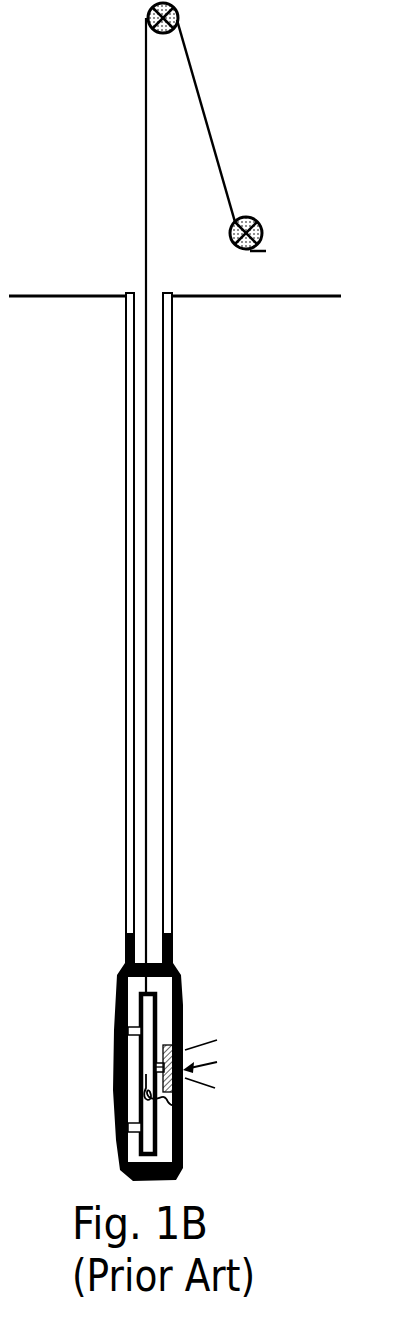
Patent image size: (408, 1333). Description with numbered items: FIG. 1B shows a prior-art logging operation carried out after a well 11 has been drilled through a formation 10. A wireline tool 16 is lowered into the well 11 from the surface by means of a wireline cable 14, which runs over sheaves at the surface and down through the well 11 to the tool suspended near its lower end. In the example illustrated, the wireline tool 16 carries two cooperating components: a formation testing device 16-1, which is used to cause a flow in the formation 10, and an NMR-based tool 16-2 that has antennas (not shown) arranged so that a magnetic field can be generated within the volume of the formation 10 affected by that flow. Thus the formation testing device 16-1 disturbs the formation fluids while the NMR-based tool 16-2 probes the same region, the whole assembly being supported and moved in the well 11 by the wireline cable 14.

The wireline cable 14 is at (76, 172).
The formation 10 is at (277, 882).
The well 11 is at (172, 695).
The wireline tool 16 is at (106, 1033).
The formation testing device 16-1 is at (178, 1105).
The NMR-based tool 16-2 is at (184, 1047).